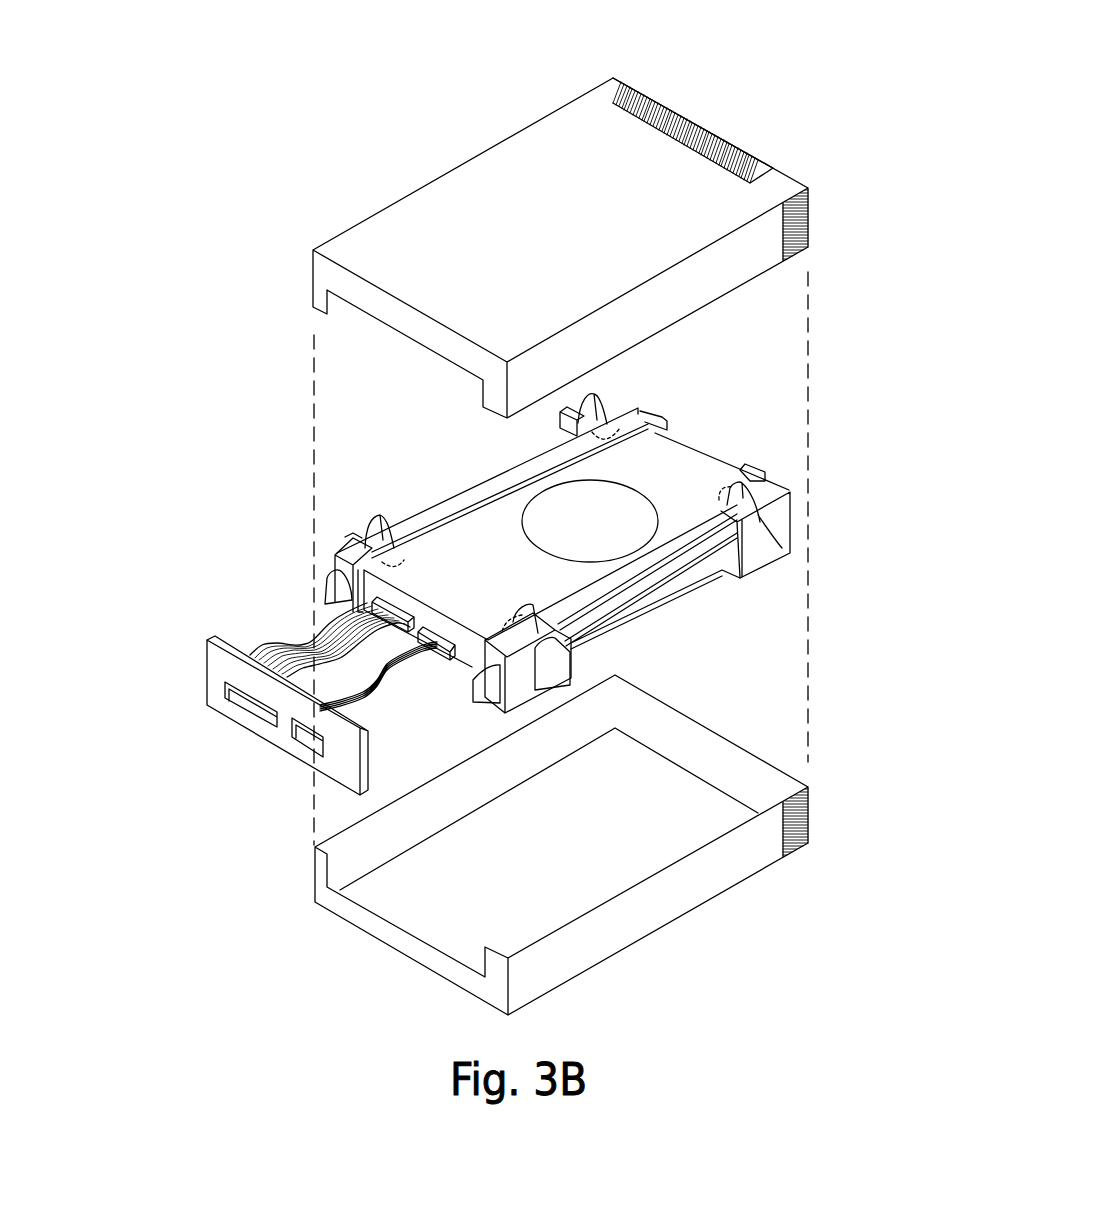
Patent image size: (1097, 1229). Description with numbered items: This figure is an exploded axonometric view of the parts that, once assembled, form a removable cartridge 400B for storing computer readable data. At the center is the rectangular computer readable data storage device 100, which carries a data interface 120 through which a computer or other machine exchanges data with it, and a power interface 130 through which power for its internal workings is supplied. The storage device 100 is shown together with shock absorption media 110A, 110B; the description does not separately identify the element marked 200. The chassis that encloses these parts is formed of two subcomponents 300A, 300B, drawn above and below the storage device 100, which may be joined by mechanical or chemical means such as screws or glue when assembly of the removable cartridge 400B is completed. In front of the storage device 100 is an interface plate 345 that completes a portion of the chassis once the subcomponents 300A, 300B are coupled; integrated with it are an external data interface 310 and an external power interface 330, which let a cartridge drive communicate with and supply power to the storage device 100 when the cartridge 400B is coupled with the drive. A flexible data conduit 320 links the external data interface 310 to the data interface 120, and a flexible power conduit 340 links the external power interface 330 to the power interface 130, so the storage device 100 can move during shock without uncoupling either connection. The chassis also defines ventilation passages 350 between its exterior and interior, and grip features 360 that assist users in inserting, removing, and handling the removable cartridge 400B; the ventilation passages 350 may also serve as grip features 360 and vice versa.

The chassis subcomponent 300A is at (627, 82).
The ventilation passages 350 is at (697, 118).
The grip features 360 is at (813, 207).
The removable cartridge 400B is at (821, 106).
The computer readable data storage device 100 is at (680, 437).
The shock absorption media 110A is at (622, 386).
The shock absorption media 110B is at (645, 633).
The frame 200 is at (703, 445).
The data interface 120 is at (407, 607).
The power interface 130 is at (443, 640).
The data conduit 320 is at (280, 642).
The power conduit 340 is at (420, 662).
The interface plate 345 is at (203, 675).
The external data interface 310 is at (252, 720).
The external power interface 330 is at (312, 755).
The chassis subcomponent 300B is at (617, 998).